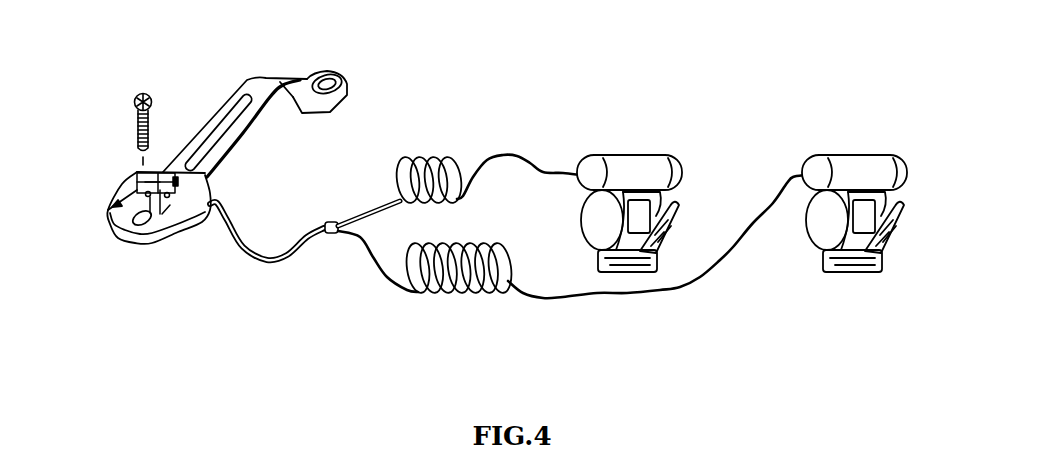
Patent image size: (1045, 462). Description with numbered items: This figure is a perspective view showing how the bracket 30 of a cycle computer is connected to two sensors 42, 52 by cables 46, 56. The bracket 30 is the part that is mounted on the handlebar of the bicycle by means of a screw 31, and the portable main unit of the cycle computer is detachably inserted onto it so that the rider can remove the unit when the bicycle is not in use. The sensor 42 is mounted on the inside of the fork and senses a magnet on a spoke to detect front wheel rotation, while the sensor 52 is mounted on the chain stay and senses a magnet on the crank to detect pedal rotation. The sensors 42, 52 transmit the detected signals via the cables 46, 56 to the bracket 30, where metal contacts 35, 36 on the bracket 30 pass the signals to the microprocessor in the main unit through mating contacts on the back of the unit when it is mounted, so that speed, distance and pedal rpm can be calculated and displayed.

The bracket 30 is at (123, 221).
The screw 31 is at (147, 93).
The metal contact 35 is at (145, 182).
The metal contact 36 is at (150, 197).
The sensor 42 is at (637, 152).
The cable 46 is at (515, 150).
The sensor 52 is at (862, 152).
The cable 56 is at (527, 293).